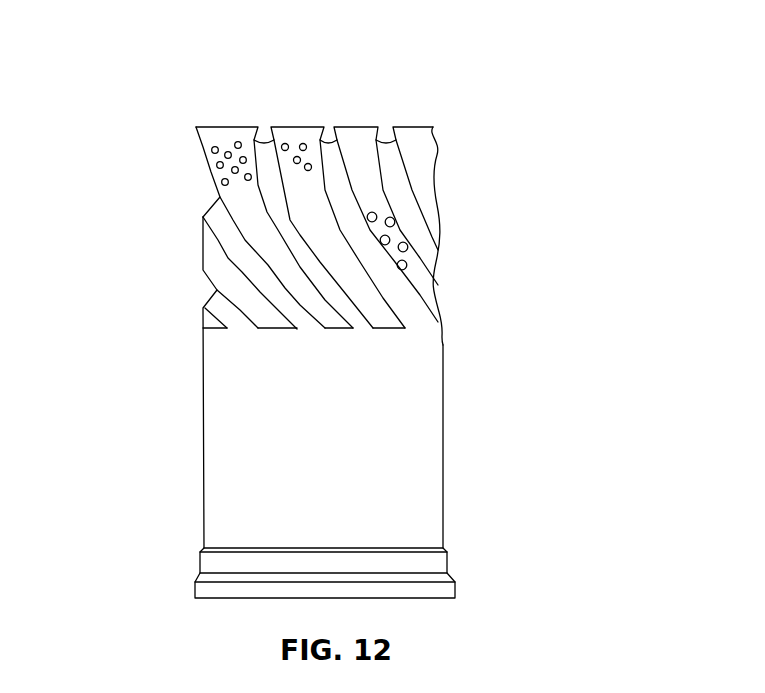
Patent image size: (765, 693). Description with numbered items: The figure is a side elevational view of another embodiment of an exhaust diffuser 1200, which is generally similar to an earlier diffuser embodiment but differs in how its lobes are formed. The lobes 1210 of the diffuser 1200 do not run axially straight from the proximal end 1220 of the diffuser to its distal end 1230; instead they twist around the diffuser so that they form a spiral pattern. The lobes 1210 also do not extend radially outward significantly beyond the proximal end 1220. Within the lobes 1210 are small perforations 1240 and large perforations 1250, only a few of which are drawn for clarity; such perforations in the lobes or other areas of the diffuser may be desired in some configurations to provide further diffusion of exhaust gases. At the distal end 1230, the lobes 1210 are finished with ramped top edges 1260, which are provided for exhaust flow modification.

The diffuser 1200 is at (138, 334).
The lobes 1210 is at (387, 198).
The proximal end 1220 is at (546, 296).
The distal end 1230 is at (177, 127).
The small perforations 1240 is at (212, 151).
The large perforations 1250 is at (408, 263).
The ramped top edges 1260 is at (358, 127).